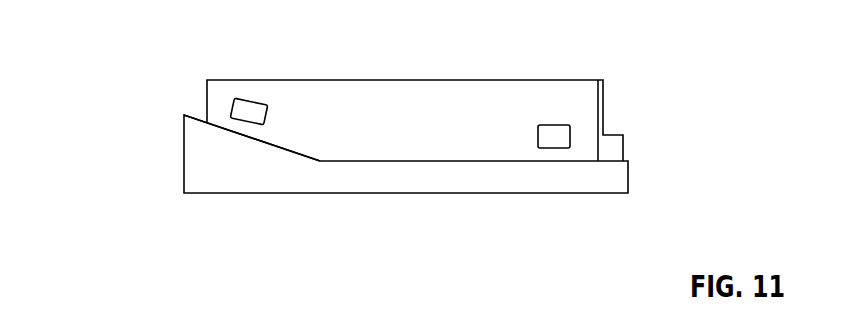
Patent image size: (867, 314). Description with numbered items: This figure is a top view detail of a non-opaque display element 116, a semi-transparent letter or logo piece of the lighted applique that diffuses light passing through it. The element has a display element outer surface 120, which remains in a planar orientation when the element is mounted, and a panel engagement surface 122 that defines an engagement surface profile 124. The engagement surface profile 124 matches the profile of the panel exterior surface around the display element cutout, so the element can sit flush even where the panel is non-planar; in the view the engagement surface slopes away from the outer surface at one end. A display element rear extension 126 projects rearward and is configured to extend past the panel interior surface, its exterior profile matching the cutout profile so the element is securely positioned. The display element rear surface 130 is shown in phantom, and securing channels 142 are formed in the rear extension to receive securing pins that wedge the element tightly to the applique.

The non-opaque display element 116 is at (124, 40).
The display element outer surface 120 is at (555, 202).
The panel engagement surface 122 is at (403, 160).
The engagement surface profile 124 is at (293, 152).
The display element rear extension 126 is at (583, 110).
The display element rear surface 130 is at (543, 80).
The securing channel 142 is at (250, 99).